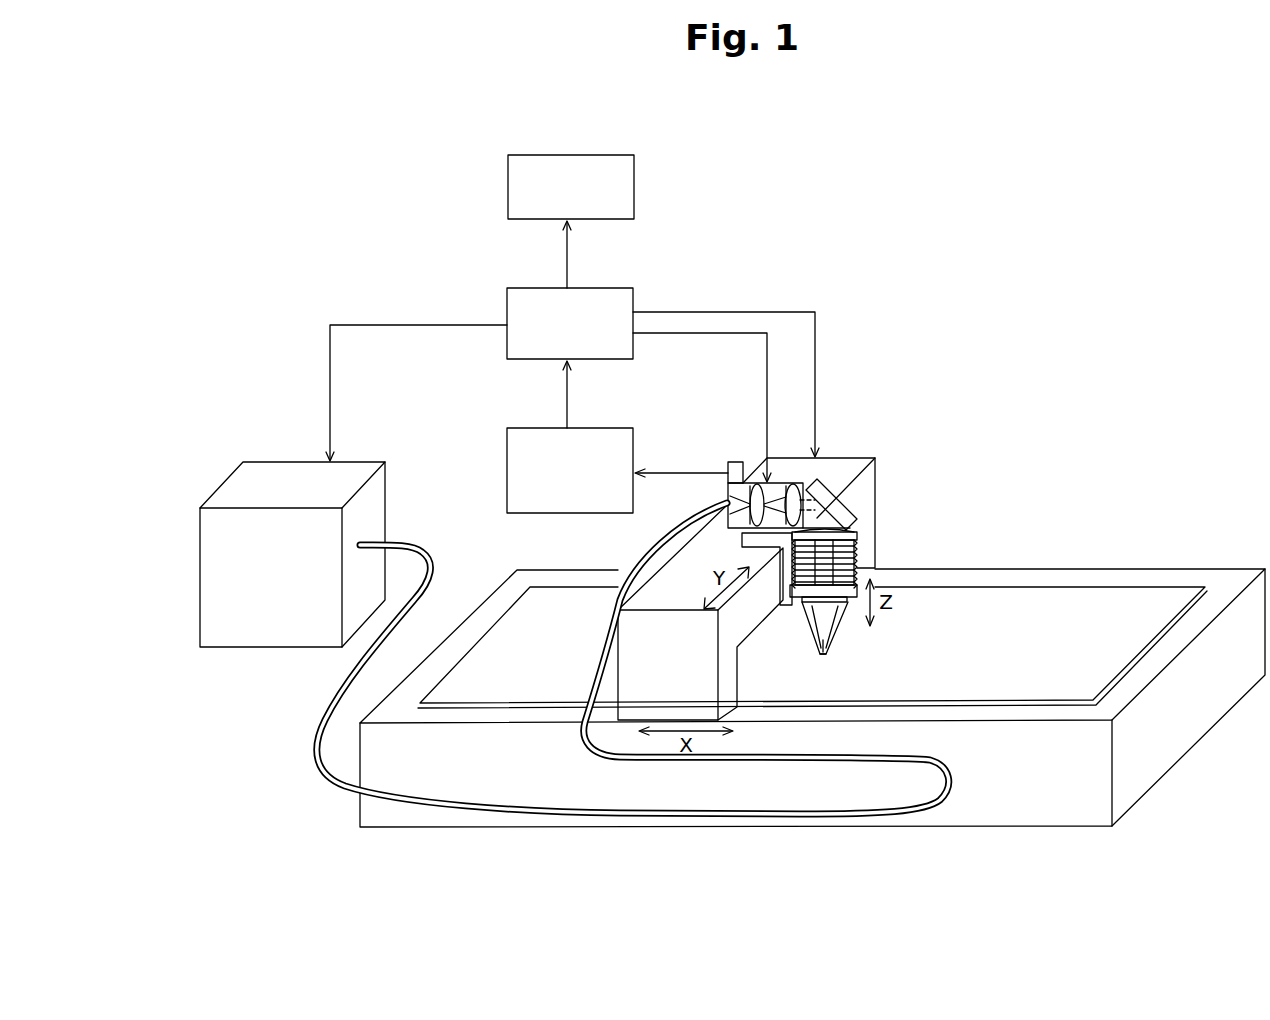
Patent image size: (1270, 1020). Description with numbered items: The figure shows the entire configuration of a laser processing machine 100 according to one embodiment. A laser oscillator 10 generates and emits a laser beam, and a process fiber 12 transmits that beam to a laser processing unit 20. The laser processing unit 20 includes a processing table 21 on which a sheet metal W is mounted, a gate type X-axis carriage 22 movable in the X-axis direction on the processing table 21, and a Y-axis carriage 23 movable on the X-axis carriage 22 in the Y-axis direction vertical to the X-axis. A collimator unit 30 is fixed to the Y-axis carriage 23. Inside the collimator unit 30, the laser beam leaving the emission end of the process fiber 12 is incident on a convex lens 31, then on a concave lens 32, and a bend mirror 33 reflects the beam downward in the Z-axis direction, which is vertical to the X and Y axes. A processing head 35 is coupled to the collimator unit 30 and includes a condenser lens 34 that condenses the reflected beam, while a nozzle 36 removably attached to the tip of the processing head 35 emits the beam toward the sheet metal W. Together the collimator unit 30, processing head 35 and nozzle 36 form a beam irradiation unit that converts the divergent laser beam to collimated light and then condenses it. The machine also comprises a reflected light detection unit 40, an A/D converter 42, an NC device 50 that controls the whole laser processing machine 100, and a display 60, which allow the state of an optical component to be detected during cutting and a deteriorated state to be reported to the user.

The laser processing machine 100 is at (882, 183).
The laser oscillator 10 is at (279, 474).
The process fiber 12 is at (578, 816).
The laser processing unit 20 is at (957, 569).
The processing table 21 is at (1112, 571).
The sheet metal W is at (1015, 592).
The X-axis carriage 22 is at (876, 485).
The Y-axis carriage 23 is at (783, 606).
The collimator unit 30 is at (728, 498).
The convex lens 31 is at (757, 488).
The concave lens 32 is at (786, 487).
The bend mirror 33 is at (838, 486).
The condenser lens 34 is at (824, 638).
The processing head 35 is at (838, 640).
The nozzle 36 is at (834, 649).
The reflected light detection unit 40 is at (730, 468).
The A/D converter 42 is at (592, 428).
The NC device 50 is at (592, 288).
The display 60 is at (634, 190).